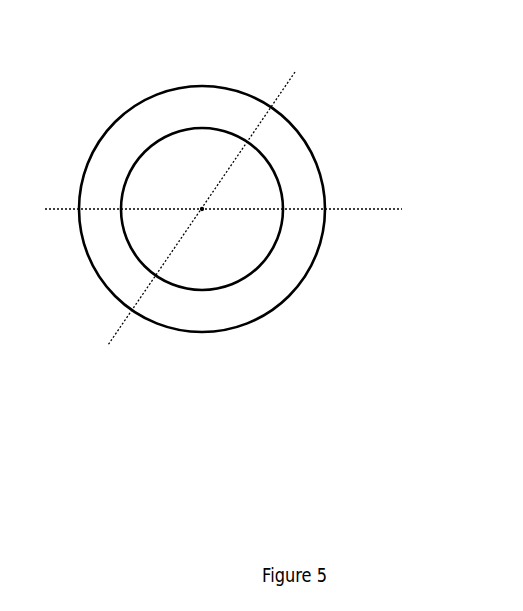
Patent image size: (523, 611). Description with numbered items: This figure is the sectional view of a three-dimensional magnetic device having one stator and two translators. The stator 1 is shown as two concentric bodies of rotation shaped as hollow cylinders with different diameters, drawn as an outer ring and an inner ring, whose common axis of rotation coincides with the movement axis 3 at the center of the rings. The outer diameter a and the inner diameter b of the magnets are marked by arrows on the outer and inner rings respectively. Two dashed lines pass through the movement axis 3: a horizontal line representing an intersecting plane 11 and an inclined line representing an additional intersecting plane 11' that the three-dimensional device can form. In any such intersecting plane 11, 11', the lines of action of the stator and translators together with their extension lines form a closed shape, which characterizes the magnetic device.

The stator 1 is at (199, 182).
The movement axis 3 is at (203, 208).
The intersecting plane 11 is at (256, 177).
The additional intersecting plane 11' is at (201, 240).
The outer diameter a is at (108, 127).
The inner diameter b is at (123, 183).